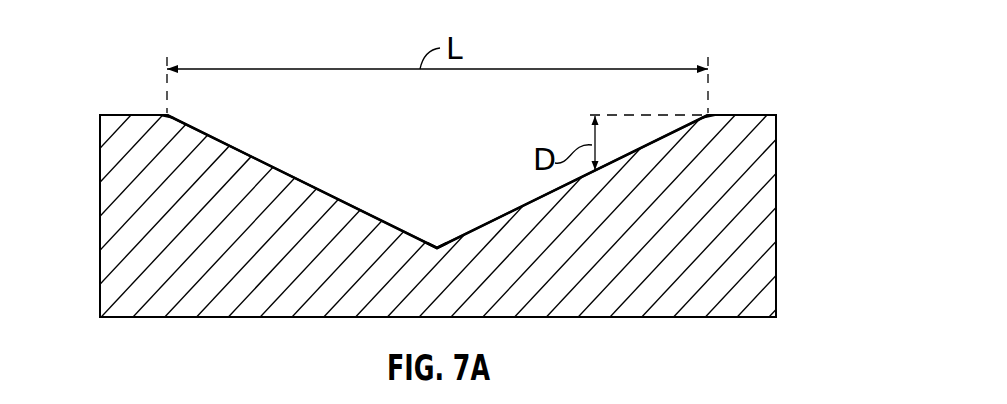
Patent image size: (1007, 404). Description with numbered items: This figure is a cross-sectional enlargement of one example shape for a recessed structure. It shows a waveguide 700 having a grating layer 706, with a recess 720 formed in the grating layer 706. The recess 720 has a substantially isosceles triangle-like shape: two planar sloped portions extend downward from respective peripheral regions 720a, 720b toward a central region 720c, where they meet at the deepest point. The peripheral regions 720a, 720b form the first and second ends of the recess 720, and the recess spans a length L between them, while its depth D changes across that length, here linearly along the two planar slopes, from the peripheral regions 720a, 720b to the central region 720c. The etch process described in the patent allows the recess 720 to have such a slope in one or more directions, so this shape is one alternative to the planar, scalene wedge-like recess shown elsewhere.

The waveguide 700 is at (771, 54).
The grating layer 706 is at (118, 238).
The recess 720 is at (298, 130).
The peripheral region 720a is at (148, 112).
The peripheral region 720b is at (740, 108).
The central region 720c is at (436, 244).